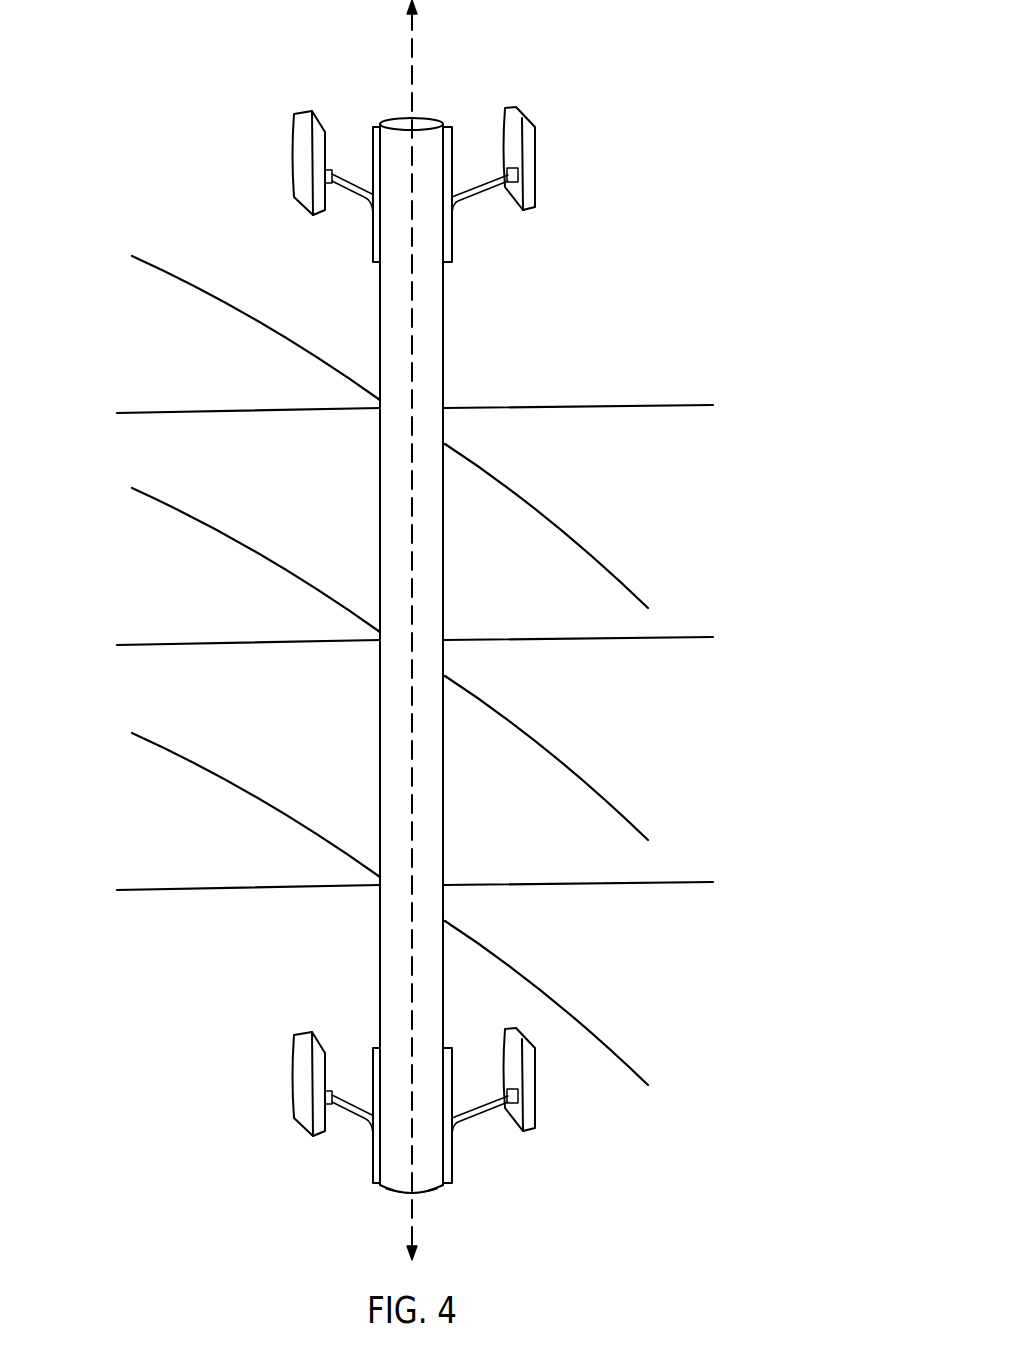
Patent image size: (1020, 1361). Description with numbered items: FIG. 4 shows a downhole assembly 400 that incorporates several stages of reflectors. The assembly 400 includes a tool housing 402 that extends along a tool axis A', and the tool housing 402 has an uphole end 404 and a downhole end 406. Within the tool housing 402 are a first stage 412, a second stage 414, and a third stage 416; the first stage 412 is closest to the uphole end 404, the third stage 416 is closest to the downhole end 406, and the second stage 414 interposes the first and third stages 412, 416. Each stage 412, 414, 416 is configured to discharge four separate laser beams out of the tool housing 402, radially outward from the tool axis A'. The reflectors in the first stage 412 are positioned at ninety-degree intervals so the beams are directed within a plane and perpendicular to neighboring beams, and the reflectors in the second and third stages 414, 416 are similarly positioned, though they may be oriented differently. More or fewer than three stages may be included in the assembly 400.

The downhole assembly 400 is at (722, 37).
The tool housing 402 is at (440, 350).
The uphole end 404 is at (244, 122).
The downhole end 406 is at (244, 1148).
The first stage 412 is at (304, 381).
The second stage 414 is at (416, 653).
The third stage 416 is at (416, 898).
The tool axis A is at (413, 43).